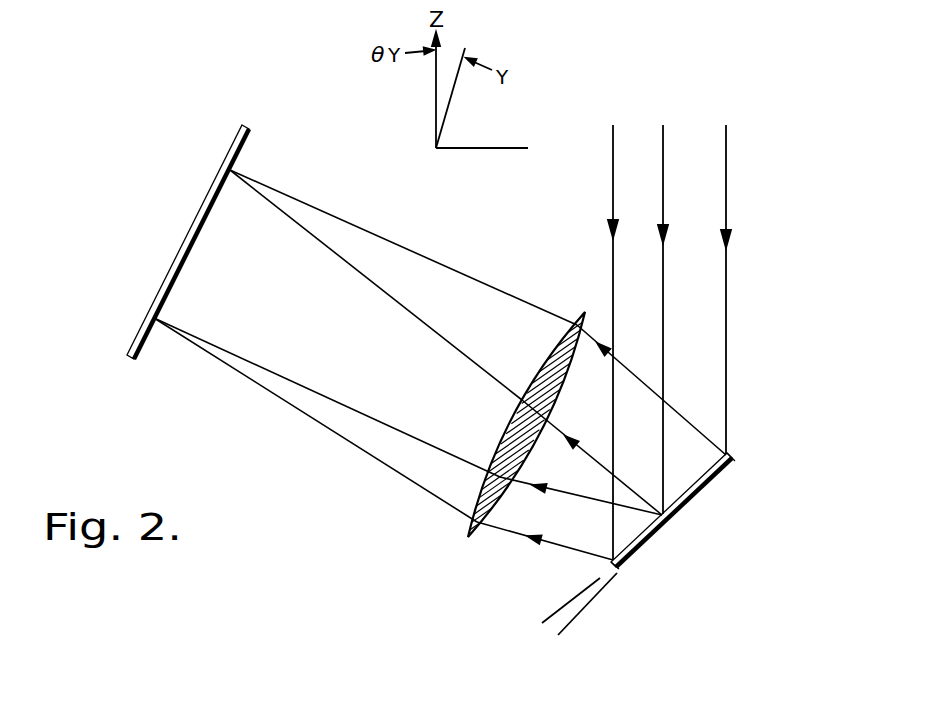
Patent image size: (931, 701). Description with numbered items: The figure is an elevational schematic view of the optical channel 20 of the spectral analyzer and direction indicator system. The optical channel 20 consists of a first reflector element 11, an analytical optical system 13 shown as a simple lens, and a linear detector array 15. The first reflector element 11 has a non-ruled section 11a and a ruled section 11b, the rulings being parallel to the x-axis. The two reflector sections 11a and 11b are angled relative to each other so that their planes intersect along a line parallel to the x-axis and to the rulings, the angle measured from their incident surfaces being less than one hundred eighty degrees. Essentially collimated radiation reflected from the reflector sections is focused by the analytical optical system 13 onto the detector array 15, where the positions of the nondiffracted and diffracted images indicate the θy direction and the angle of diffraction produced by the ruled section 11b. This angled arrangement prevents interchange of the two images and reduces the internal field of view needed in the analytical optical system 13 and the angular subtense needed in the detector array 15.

The first reflector element 11 is at (699, 539).
The non-ruled section 11a is at (635, 552).
The ruled section 11b is at (727, 468).
The analytical optical system 13 is at (585, 311).
The linear detector array 15 is at (251, 127).
The optical channel 20 is at (345, 565).